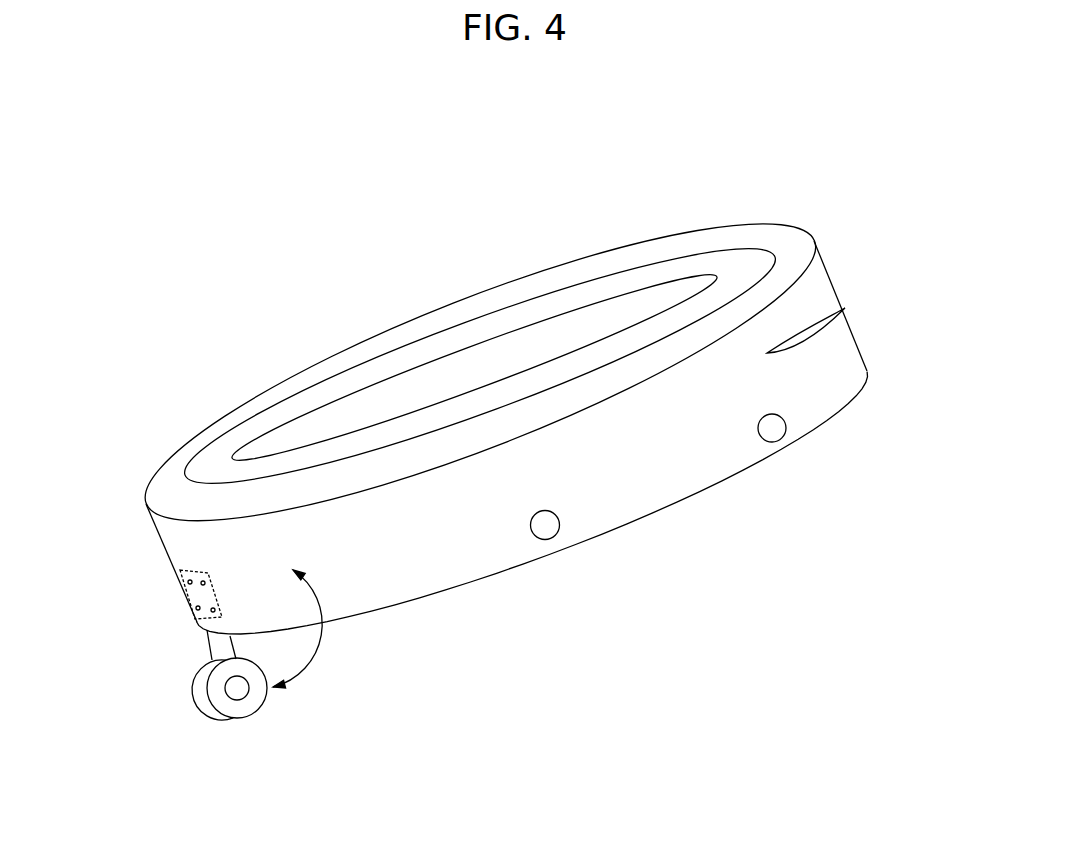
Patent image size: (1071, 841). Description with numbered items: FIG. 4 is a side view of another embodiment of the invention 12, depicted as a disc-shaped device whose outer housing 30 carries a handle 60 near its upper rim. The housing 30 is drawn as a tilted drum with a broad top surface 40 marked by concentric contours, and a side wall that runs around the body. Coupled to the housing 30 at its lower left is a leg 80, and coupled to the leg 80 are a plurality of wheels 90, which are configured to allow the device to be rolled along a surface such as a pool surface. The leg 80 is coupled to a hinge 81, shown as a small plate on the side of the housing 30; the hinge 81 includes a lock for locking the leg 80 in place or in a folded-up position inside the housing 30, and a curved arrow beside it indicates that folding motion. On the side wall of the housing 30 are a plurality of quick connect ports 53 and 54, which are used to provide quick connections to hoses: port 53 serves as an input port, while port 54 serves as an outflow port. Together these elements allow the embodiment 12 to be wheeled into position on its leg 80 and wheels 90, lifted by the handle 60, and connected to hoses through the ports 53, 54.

The invention 12 is at (369, 296).
The housing 30 is at (697, 487).
The top surface with concentric grooves 40 is at (738, 283).
The quick connect port 53 is at (559, 528).
The quick connect port 54 is at (770, 440).
The handle 60 is at (844, 308).
The leg 80 is at (217, 647).
The hinge 81 is at (227, 603).
The wheels 90 is at (245, 719).